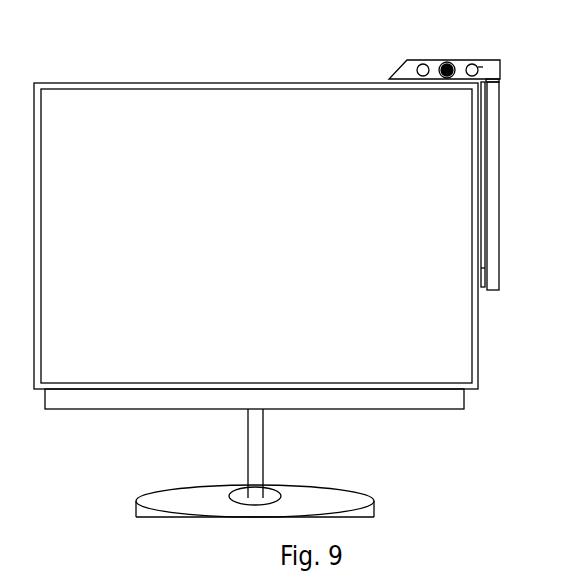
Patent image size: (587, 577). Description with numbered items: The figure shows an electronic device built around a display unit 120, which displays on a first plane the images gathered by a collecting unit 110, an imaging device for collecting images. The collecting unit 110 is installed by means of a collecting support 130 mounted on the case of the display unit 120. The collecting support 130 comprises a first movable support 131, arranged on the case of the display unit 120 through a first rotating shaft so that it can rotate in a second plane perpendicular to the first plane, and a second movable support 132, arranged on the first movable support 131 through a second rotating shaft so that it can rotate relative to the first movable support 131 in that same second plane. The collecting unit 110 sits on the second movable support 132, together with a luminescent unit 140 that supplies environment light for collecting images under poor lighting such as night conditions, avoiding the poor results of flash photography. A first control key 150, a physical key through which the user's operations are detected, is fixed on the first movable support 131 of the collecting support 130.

The collecting unit 110 is at (451, 63).
The display unit 120 is at (281, 101).
The collecting support 130 is at (512, 120).
The first movable support 131 is at (494, 182).
The second movable support 132 is at (494, 60).
The luminescent unit 140 is at (421, 60).
The first control key 150 is at (482, 61).